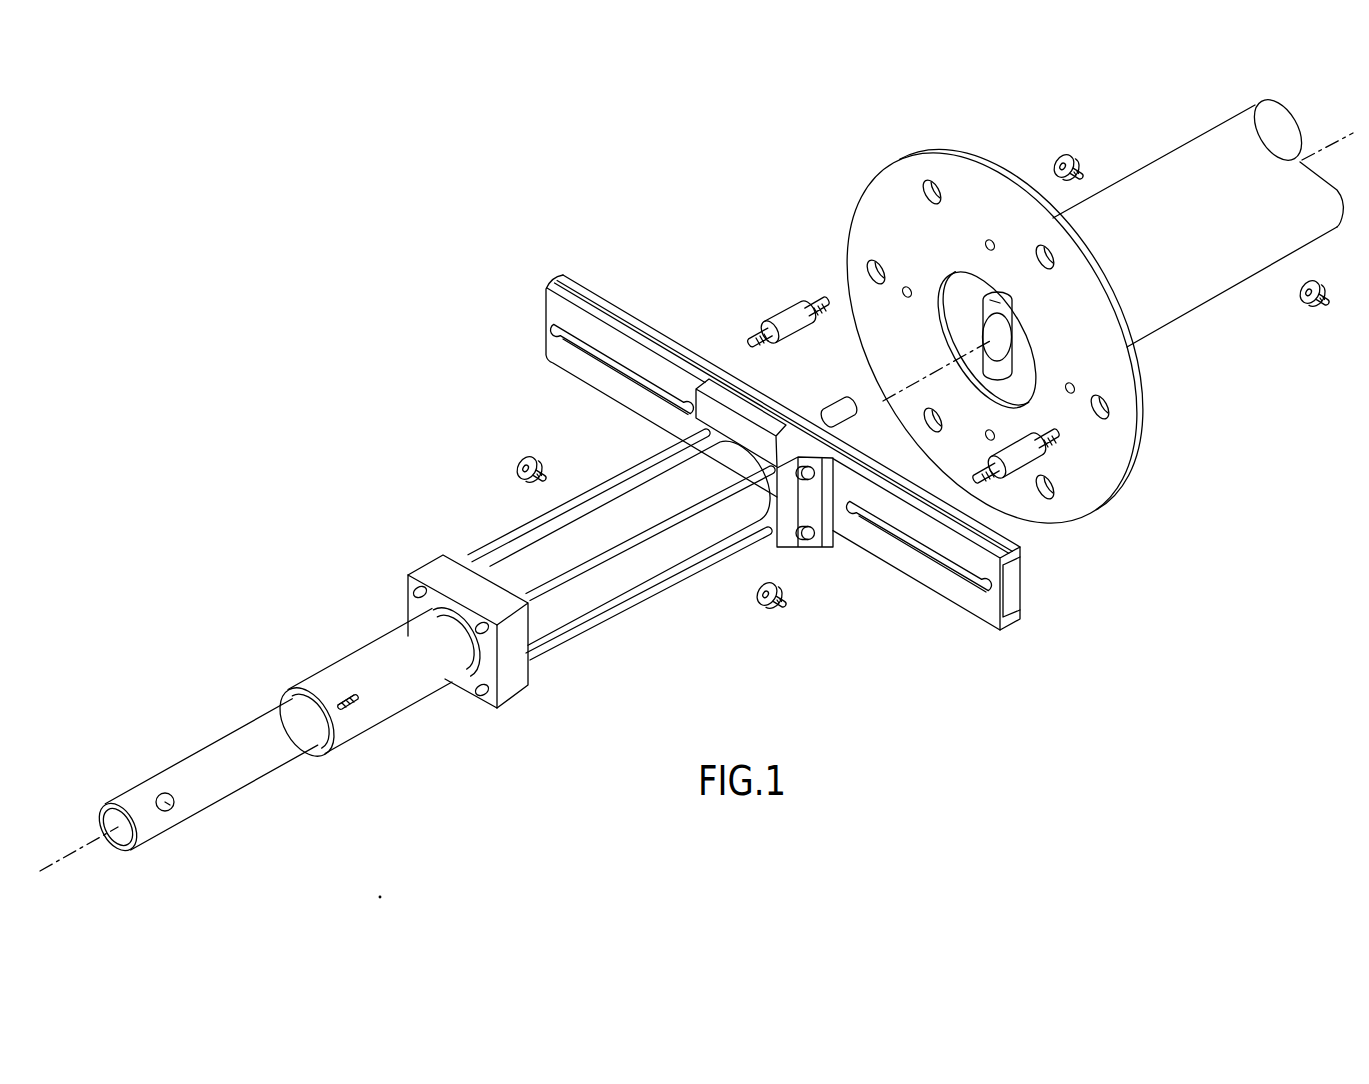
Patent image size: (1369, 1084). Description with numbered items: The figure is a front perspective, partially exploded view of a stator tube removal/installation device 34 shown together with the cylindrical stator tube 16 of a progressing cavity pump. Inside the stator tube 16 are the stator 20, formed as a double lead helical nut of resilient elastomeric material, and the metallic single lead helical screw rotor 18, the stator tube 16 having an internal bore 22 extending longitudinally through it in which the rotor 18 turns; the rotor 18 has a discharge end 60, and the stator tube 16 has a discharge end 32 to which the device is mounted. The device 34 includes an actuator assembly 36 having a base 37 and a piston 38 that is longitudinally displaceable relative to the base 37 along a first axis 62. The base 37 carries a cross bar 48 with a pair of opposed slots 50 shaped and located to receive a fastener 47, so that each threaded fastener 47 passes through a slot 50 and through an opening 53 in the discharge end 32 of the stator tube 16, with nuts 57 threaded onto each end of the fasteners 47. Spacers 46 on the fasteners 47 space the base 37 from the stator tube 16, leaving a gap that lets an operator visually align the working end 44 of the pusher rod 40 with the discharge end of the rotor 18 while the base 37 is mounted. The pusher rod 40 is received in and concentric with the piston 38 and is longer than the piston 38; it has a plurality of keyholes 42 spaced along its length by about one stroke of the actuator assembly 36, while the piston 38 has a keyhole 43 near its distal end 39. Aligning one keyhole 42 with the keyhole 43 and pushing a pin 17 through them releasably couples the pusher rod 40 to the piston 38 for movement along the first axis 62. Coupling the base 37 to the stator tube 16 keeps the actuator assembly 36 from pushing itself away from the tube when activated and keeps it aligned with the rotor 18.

The stator tube 16 is at (1226, 298).
The pin 17 is at (352, 710).
The rotor 18 is at (1012, 344).
The stator 20 is at (955, 290).
The internal bore 22 is at (993, 300).
The discharge end 32 is at (878, 200).
The stator tube removal/installation device 34 is at (412, 440).
The actuator assembly 36 is at (500, 566).
The base 37 is at (655, 565).
The piston 38 is at (358, 660).
The distal end 39 is at (300, 681).
The pusher rod 40 is at (190, 762).
The keyholes 42 is at (174, 797).
The keyhole 43 is at (358, 695).
The working end 44 is at (838, 408).
The spacers 46 is at (790, 306).
The fastener 47 is at (752, 334).
The cross bar 48 is at (606, 300).
The slots 50 is at (586, 372).
The opening 53 is at (927, 200).
The nuts 57 is at (1083, 163).
The discharge end 60 is at (990, 338).
The first axis 62 is at (85, 852).